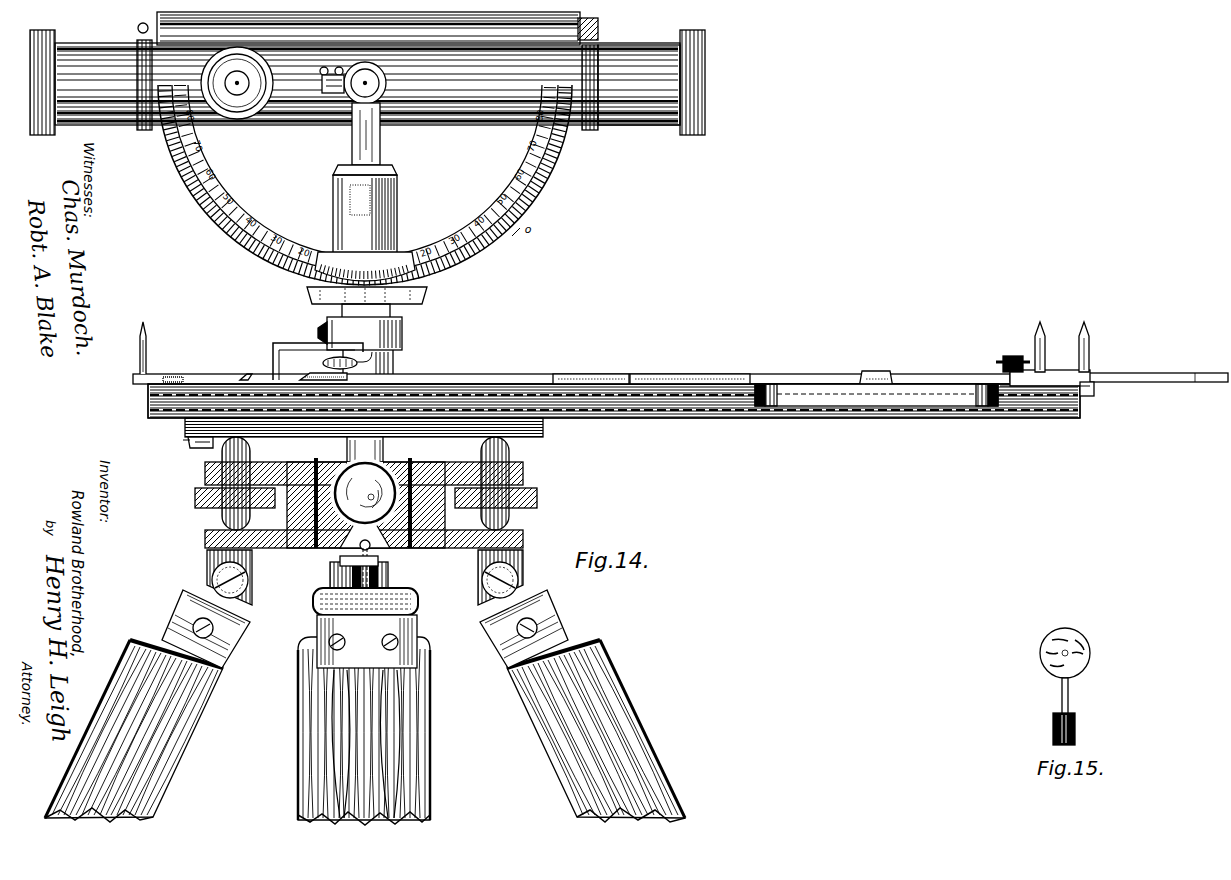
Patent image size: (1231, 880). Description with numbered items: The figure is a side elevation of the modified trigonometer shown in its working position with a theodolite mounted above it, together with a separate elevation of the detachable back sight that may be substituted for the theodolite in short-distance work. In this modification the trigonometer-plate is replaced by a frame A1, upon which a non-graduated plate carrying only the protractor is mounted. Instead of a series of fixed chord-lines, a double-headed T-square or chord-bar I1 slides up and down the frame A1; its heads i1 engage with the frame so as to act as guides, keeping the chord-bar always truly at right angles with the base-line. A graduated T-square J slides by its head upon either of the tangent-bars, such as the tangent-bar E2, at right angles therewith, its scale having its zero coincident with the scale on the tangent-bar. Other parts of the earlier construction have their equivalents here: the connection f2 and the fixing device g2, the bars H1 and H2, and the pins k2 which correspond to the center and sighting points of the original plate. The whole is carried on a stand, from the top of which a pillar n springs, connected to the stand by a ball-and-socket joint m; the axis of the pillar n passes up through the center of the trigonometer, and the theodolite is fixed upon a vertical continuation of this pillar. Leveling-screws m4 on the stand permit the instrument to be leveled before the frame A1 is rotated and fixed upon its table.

The leveling-screw m4 is at (208, 380).
The radial-bar connection f2 is at (305, 378).
The fixing device g2 is at (357, 363).
The pillar n is at (186, 437).
The ball-and-socket joint m is at (378, 540).
The graduated T-square J is at (658, 374).
The double-headed T-square (chord-bar) I1 is at (876, 371).
The head of chord-bar i1 is at (806, 399).
The tangent-bar E2 is at (648, 378).
The frame A1 is at (706, 418).
The bar H2 is at (1130, 373).
The bar H1 is at (1132, 383).
The sight-pin k2 is at (1089, 344).